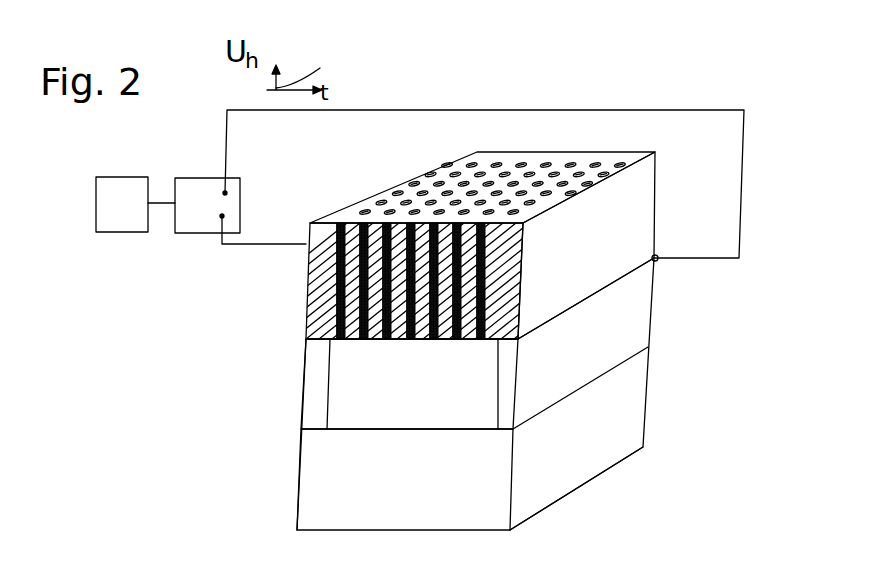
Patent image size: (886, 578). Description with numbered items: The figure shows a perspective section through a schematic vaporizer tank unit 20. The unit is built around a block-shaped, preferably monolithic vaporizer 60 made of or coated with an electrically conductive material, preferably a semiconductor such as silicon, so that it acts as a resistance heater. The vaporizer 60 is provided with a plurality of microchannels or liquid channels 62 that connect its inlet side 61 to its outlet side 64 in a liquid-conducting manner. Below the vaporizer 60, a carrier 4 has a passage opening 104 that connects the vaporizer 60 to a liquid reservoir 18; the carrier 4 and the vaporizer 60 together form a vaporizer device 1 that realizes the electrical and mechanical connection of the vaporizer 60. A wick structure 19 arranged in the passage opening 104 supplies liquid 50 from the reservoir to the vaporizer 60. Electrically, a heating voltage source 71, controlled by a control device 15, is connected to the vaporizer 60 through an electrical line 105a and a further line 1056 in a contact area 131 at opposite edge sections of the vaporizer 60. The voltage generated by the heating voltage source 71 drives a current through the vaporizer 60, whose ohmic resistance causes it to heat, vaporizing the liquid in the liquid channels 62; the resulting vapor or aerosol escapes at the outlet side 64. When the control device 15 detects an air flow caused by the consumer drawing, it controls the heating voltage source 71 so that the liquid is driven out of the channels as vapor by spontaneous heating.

The vaporizer device 1 is at (685, 299).
The carrier 4 is at (315, 410).
The control device 15 is at (140, 221).
The liquid reservoir 18 is at (647, 402).
The wick structure 19 is at (406, 408).
The vaporizer tank unit 20 is at (232, 442).
The liquid 50 is at (406, 507).
The vaporizer 60 is at (295, 299).
The inlet side 61 is at (443, 342).
The liquid channels 62 is at (400, 303).
The outlet side 64 is at (394, 197).
The heating voltage source 71 is at (241, 196).
The passage opening 104 is at (324, 425).
The electrical line 105a is at (265, 248).
The contact area 131 is at (662, 240).
The electrical conductor 1056 is at (741, 110).